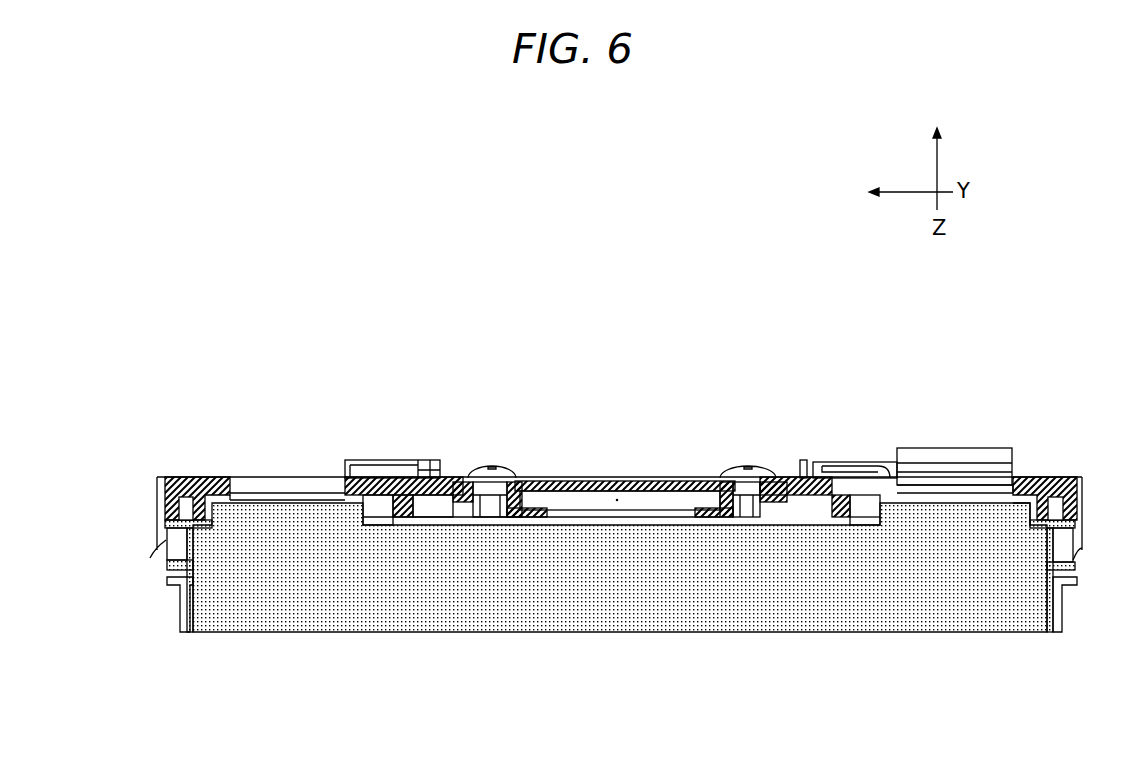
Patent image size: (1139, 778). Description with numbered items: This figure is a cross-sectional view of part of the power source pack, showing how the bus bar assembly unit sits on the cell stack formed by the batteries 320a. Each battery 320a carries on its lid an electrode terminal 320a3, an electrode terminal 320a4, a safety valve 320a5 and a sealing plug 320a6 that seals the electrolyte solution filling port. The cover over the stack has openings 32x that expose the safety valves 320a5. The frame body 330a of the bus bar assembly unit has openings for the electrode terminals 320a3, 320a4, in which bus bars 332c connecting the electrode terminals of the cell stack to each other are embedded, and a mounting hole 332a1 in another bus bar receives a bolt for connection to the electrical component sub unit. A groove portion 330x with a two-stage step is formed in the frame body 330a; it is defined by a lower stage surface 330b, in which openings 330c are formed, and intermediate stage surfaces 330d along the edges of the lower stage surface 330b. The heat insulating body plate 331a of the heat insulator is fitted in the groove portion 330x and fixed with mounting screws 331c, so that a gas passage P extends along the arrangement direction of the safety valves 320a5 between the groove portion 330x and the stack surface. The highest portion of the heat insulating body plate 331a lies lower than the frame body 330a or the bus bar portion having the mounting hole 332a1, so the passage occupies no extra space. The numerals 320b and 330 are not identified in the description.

The battery 320a is at (293, 608).
The frame wall portion 320b is at (163, 563).
The cover member 330 is at (217, 476).
The frame body 330a is at (196, 477).
The lower stage surface 330b is at (528, 497).
The openings 330c is at (242, 477).
The intermediate stage surfaces 330d is at (494, 470).
The groove portion 330x is at (642, 505).
The openings 32x is at (653, 522).
The heat insulating body plate 331a is at (703, 492).
The mounting screws 331c is at (466, 480).
The metal bus bars 332c is at (254, 498).
The mounting hole 332a1 is at (925, 485).
The electrode terminal 320a3 is at (331, 500).
The electrode terminal 320a4 is at (1031, 502).
The safety valve 320a5 is at (570, 520).
The sealing plug 320a6 is at (810, 478).
The gas passage P is at (617, 502).